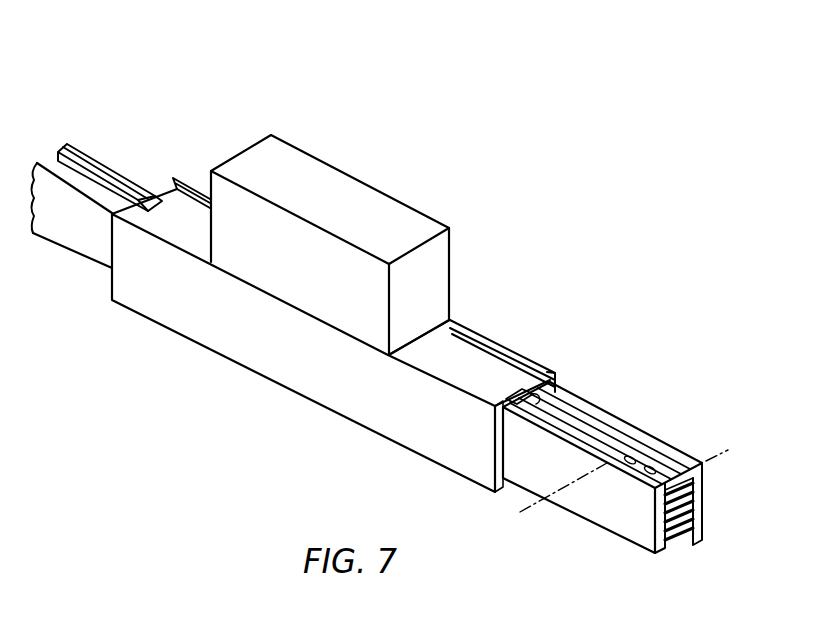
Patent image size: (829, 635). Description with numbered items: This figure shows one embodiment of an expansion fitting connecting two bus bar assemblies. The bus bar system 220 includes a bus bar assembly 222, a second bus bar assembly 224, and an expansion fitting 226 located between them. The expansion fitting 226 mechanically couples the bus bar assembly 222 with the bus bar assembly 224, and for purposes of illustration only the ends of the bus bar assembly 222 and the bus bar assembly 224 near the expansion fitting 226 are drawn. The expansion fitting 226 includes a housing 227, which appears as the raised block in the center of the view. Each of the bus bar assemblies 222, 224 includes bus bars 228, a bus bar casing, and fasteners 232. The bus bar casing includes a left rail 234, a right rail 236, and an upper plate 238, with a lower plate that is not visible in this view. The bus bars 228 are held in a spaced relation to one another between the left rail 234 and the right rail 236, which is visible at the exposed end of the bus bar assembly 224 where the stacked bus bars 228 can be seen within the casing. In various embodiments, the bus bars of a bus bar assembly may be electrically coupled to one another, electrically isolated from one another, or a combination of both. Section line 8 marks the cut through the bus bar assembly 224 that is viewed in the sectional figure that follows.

The bus bar system 220 is at (216, 79).
The bus bar assembly 222 is at (117, 151).
The bus bar assembly 224 is at (629, 465).
The expansion fitting 226 is at (330, 209).
The housing 227 is at (373, 199).
The bus bars 228 is at (685, 540).
The fasteners 232 is at (647, 470).
The left rail 234 is at (628, 530).
The right rail 236 is at (633, 437).
The upper plate 238 is at (562, 412).
The section line 8- 8 is at (522, 512).